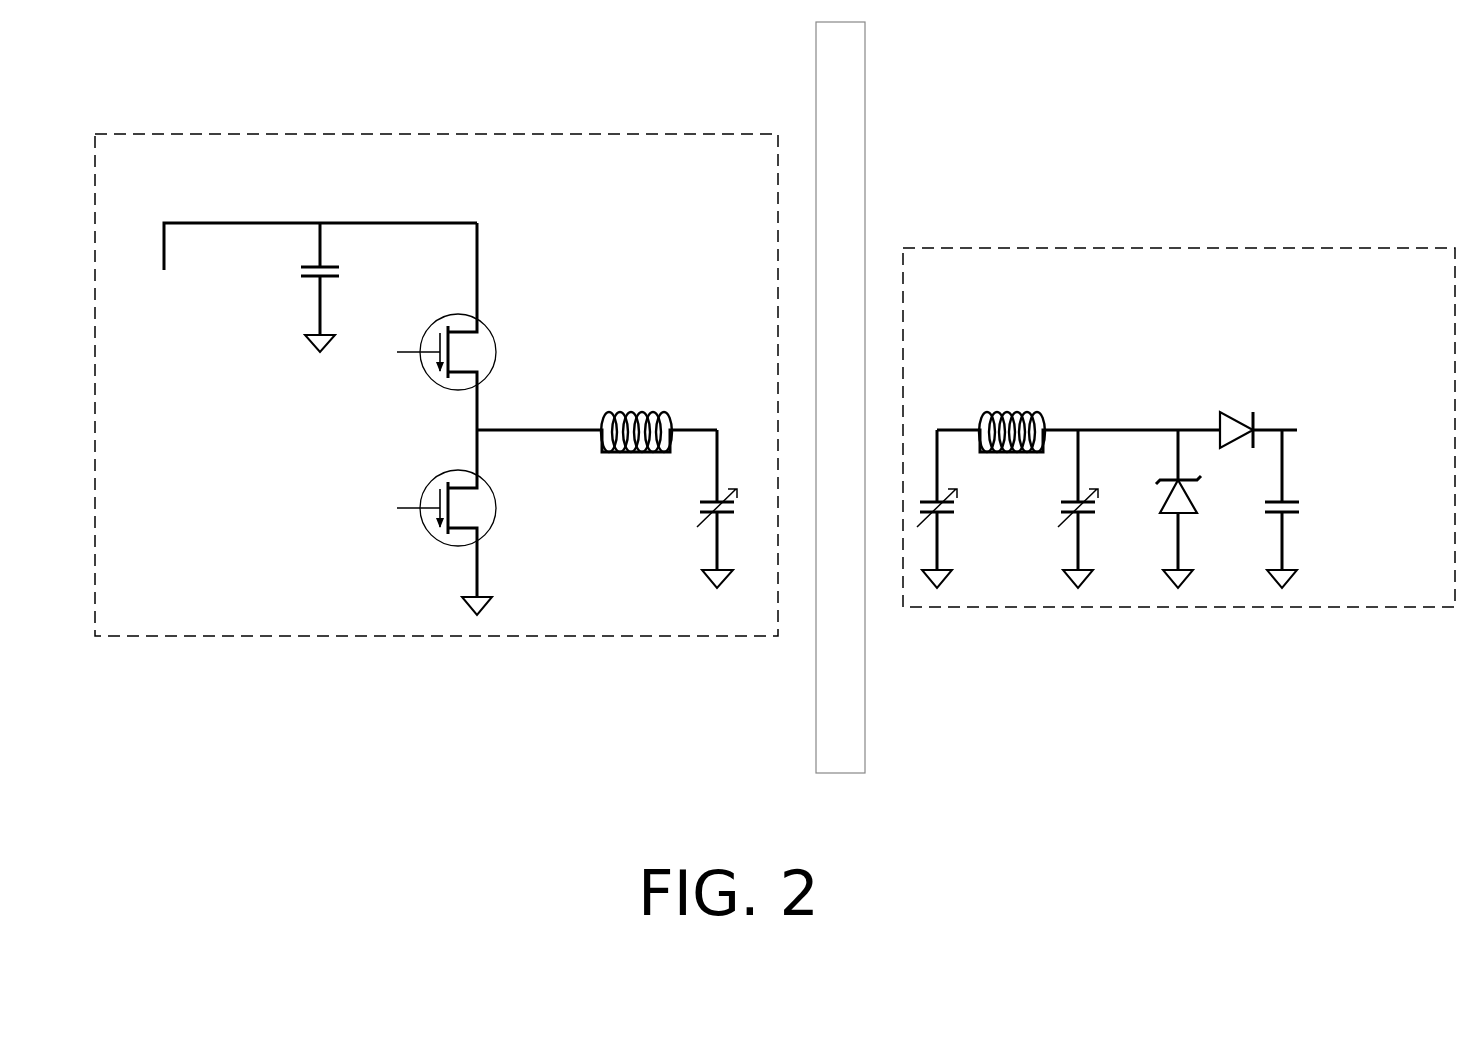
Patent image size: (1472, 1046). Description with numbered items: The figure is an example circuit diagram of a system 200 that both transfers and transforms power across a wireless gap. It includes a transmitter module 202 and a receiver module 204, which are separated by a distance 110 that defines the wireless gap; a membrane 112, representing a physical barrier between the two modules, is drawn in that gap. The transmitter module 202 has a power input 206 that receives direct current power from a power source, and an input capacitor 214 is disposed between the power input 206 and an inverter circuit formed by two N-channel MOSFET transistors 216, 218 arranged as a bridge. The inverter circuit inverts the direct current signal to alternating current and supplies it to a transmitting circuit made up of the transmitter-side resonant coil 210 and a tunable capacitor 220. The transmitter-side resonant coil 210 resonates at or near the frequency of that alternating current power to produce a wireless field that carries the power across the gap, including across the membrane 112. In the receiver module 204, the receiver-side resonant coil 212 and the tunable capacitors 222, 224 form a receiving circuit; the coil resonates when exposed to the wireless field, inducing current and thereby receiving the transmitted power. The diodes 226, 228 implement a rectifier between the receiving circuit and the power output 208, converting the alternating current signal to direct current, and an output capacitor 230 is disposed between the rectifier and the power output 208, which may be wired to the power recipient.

The system 200 is at (1301, 50).
The membrane 112 is at (839, 118).
The distance 110 is at (891, 585).
The transmitter module 202 is at (598, 190).
The receiver module 204 is at (1325, 294).
The power input 206 is at (188, 357).
The power output 208 is at (1372, 473).
The transmitter-side resonant coil 210 is at (628, 414).
The receiver-side resonant coil 212 is at (1003, 414).
The input capacitor 214 is at (316, 268).
The N-channel MOSFET transistor 216 is at (437, 374).
The N-channel MOSFET transistor 218 is at (437, 529).
The tunable capacitor 220 is at (709, 506).
The tunable capacitor 222 is at (929, 506).
The tunable capacitor 224 is at (1070, 506).
The diode 226 is at (1170, 480).
The diode 228 is at (1226, 418).
The output capacitor 230 is at (1277, 515).